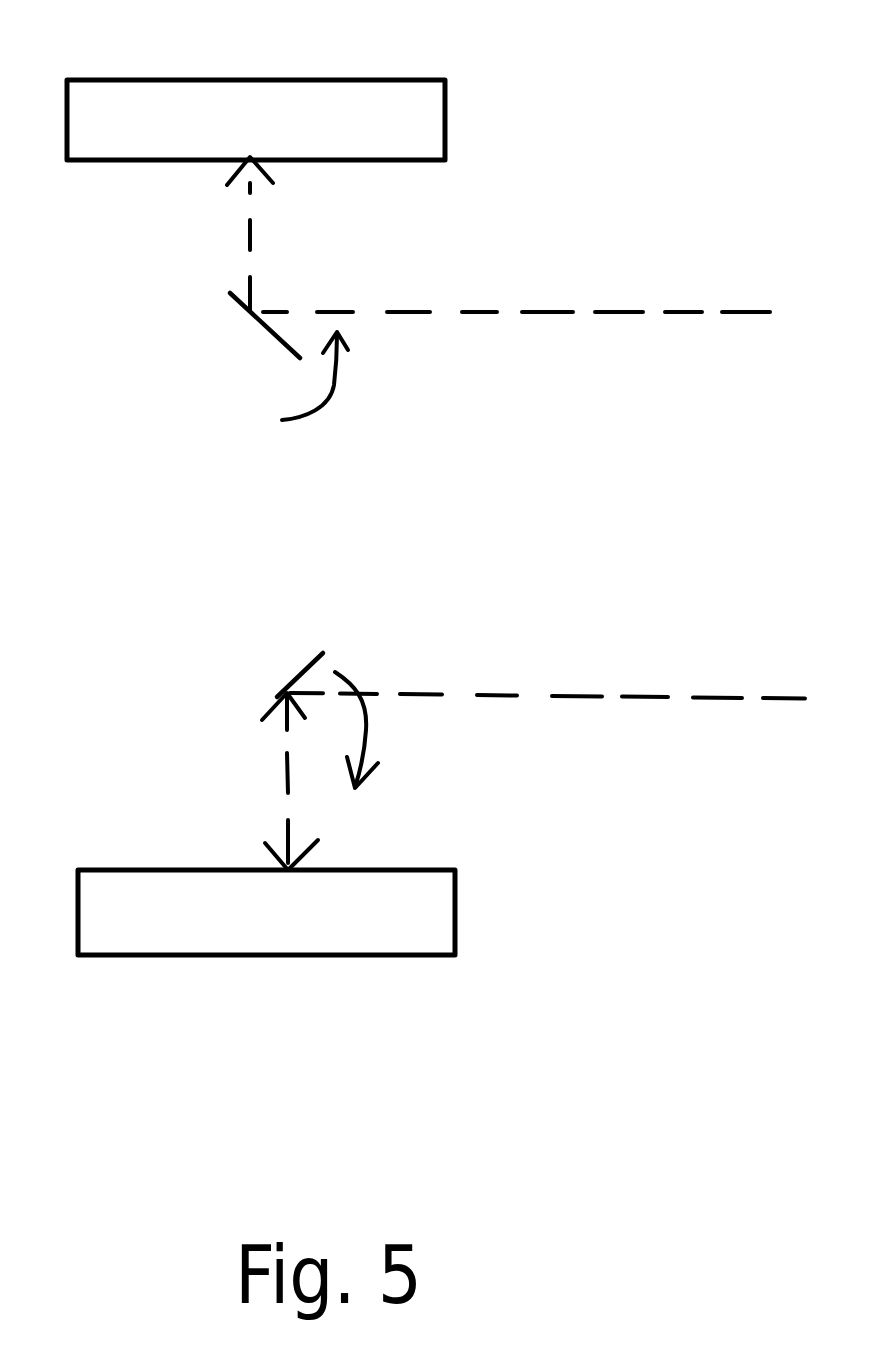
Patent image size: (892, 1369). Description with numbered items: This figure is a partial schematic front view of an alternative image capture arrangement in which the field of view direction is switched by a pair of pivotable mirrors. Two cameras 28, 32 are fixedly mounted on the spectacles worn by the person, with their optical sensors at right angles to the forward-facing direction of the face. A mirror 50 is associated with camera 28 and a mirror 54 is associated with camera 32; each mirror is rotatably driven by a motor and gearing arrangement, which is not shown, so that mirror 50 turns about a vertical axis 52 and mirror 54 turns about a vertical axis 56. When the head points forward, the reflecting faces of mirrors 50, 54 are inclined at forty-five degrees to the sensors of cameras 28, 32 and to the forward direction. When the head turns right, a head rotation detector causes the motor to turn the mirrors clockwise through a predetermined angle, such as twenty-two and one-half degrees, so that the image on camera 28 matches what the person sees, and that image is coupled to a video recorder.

The camera 32 is at (332, 97).
The camera 28 is at (318, 940).
The mirror 54 is at (285, 347).
The vertical axis 56 is at (253, 320).
The mirror 50 is at (307, 673).
The vertical axis 52 is at (277, 693).